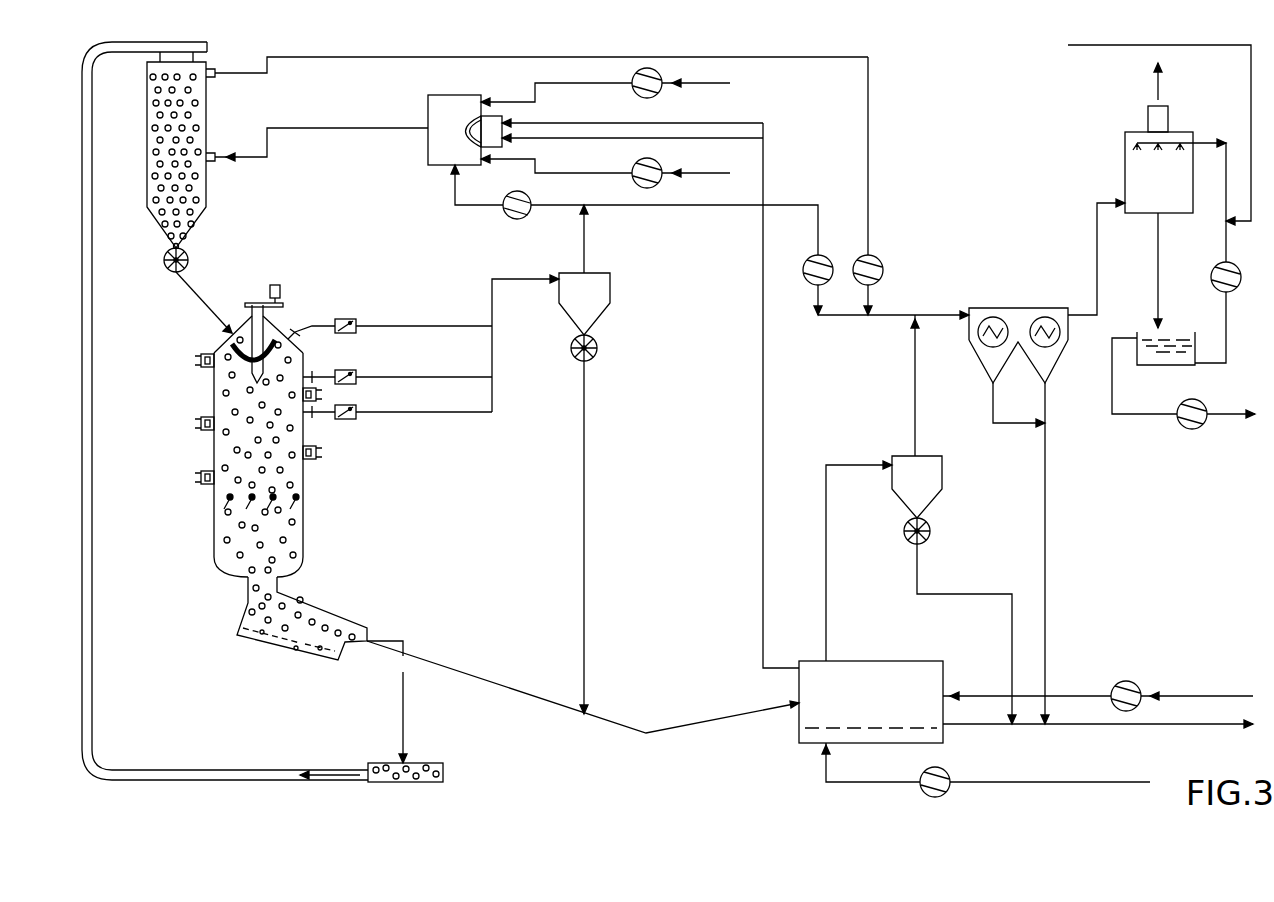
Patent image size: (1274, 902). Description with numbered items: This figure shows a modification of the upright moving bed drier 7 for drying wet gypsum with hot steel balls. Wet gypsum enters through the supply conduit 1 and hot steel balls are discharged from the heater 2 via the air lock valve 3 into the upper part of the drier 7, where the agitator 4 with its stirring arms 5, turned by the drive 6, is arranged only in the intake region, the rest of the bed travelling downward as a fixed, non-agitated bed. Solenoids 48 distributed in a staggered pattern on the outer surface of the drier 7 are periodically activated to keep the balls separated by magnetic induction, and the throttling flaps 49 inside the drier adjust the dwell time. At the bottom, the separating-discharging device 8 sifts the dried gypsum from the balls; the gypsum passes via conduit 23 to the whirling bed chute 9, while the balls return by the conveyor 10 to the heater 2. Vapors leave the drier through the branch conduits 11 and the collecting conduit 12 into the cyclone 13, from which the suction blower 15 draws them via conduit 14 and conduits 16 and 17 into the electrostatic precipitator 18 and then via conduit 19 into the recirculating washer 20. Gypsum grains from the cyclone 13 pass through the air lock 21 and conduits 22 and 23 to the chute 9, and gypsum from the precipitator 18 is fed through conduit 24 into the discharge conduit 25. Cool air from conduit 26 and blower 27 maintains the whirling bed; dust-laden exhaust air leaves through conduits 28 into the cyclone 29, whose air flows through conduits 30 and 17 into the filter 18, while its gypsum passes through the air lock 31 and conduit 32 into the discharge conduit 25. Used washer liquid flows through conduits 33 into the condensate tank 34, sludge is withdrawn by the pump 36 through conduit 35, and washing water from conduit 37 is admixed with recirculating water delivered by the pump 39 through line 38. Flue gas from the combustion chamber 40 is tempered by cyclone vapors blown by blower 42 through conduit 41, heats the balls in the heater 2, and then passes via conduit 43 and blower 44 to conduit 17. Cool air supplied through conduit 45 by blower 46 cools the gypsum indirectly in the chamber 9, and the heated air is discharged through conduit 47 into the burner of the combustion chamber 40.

The supply conduit 1 is at (292, 326).
The heater 2 is at (207, 118).
The air lock valve 3 is at (190, 259).
The agitator 4 is at (257, 343).
The stirring arms 5 is at (246, 362).
The drive 6 is at (277, 285).
The moving bed drier 7 is at (306, 541).
The separating-discharging device 8 is at (306, 612).
The whirling bed chute 9 is at (875, 743).
The conveyor 10 is at (94, 673).
The branch conduits 11 is at (424, 326).
The collecting conduit 12 is at (492, 307).
The cyclone 13 is at (610, 290).
The conduit 14 is at (779, 205).
The suction blower 15 is at (809, 258).
The conduit 16 is at (845, 317).
The conduit 17 is at (906, 315).
The electrostatic precipitator 18 is at (1017, 308).
The conduit 19 is at (1098, 274).
The recirculating washer 20 is at (1125, 169).
The air lock 21 is at (598, 348).
The conduit 22 is at (584, 490).
The conduit 23 is at (529, 698).
The conduit 24 is at (1046, 514).
The discharge conduit 25 is at (1163, 727).
The conduit 26 is at (1054, 783).
The blower 27 is at (950, 777).
The conduits 28 is at (826, 598).
The cyclone 29 is at (942, 473).
The conduit 30 is at (914, 407).
The air lock 31 is at (929, 529).
The conduit 32 is at (977, 600).
The conduits 33 is at (1160, 266).
The condensate tank 34 is at (1158, 368).
The conduit 35 is at (1157, 416).
The pump 36 is at (1190, 429).
The conduit 37 is at (1250, 92).
The scrubber liquid line 38 is at (1227, 352).
The pump 39 is at (1239, 268).
The combustion chamber 40 is at (428, 108).
The conduit 41 is at (565, 207).
The blower 42 is at (517, 220).
The conduit 43 is at (870, 111).
The blower 44 is at (876, 260).
The conduit 45 is at (1194, 694).
The blower 46 is at (1129, 681).
The conduit 47 is at (763, 410).
The solenoids 48 is at (200, 477).
The throttling flaps 49 is at (300, 497).